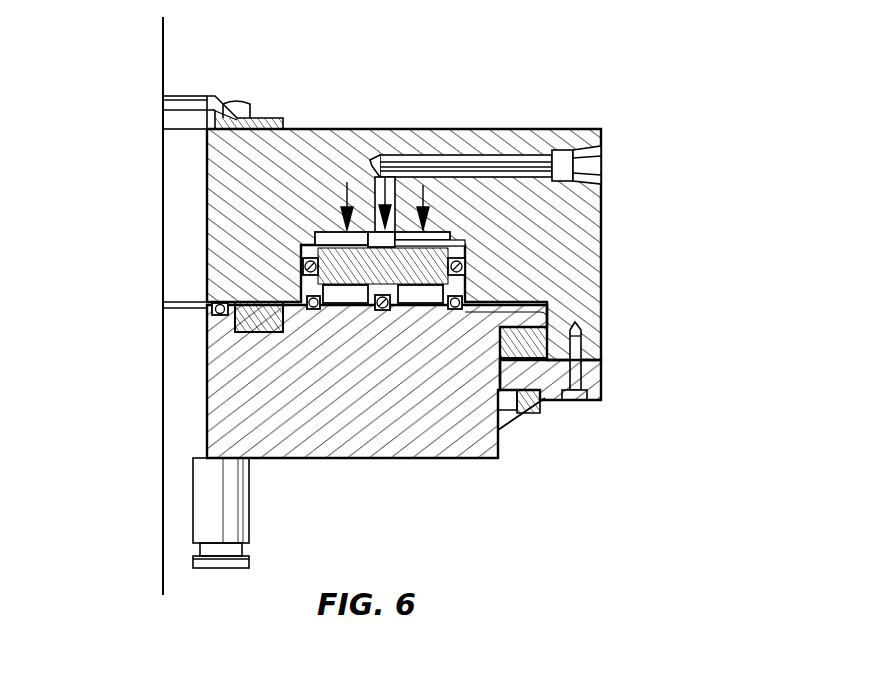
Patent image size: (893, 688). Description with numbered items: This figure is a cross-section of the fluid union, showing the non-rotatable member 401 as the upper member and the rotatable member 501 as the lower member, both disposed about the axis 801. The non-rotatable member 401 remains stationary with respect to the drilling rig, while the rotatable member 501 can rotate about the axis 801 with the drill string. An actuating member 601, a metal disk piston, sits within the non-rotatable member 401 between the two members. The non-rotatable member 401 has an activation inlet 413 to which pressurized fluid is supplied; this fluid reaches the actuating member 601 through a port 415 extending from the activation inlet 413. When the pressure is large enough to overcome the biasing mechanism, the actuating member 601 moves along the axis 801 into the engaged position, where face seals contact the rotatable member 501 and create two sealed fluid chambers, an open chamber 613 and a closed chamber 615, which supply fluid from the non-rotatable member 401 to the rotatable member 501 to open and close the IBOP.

The axis 801 is at (163, 42).
The non-rotatable member 401 is at (343, 133).
The port 415 is at (478, 160).
The activation inlet 413 is at (590, 158).
The actuating member 601 is at (458, 253).
The rotatable member 501 is at (212, 362).
The closed chamber 615 is at (338, 298).
The open chamber 613 is at (418, 298).